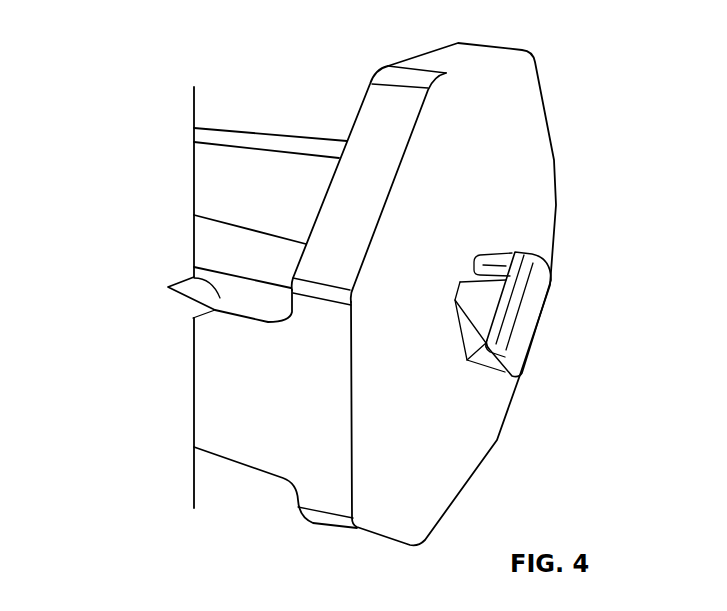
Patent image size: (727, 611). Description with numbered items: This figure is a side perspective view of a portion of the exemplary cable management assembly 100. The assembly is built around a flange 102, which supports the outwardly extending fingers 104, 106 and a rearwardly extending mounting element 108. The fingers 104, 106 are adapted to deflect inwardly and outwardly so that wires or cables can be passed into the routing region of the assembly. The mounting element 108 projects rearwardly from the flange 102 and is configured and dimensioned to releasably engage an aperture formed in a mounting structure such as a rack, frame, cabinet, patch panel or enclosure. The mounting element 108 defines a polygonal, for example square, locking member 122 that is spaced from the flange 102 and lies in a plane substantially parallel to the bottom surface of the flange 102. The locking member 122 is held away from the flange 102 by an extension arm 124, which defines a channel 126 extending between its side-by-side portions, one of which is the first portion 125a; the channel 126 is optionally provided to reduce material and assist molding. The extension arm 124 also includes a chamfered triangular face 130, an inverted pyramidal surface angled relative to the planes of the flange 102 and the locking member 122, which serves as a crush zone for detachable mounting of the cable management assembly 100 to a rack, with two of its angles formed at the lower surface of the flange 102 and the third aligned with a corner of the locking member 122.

The cable management assembly 100 is at (195, 55).
The flange 102 is at (489, 178).
The finger 104 is at (192, 277).
The finger 106 is at (248, 140).
The mounting element 108 is at (558, 297).
The polygonal locking member 122 is at (528, 300).
The extension arm 124 is at (452, 342).
The first side-by-side portion 125a is at (515, 325).
The channel 126 is at (500, 253).
The chamfered triangular face 130 is at (473, 333).